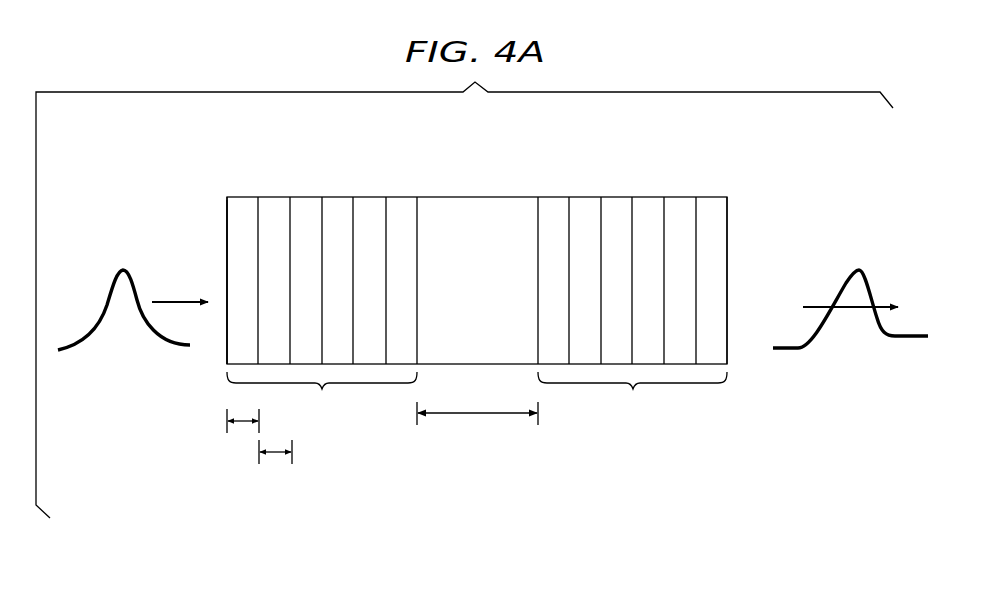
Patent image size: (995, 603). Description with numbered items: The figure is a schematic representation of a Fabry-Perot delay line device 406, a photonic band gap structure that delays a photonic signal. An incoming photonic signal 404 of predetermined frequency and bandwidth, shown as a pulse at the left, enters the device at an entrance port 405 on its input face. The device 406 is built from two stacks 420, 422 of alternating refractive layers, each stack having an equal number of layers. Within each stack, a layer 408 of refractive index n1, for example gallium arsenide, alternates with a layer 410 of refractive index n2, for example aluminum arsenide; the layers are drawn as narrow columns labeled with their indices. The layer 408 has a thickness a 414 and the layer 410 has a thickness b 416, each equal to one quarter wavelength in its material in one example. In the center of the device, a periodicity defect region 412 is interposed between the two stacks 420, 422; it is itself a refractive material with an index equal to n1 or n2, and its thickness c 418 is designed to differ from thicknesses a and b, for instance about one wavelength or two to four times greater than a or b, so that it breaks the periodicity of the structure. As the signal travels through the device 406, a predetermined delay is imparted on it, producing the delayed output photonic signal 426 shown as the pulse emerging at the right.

The photonic signal 404 is at (122, 269).
The entrance port 405 is at (227, 245).
The Fabry-Perot delay line device 406 is at (622, 182).
The layer 408 is at (240, 196).
The layer 410 is at (271, 196).
The periodicity defect region 412 is at (455, 196).
The thickness a 414 is at (232, 440).
The thickness b 416 is at (279, 482).
The thickness c 418 is at (487, 433).
The stack 420 is at (322, 309).
The stack 422 is at (632, 309).
The delayed output photonic signal 426 is at (860, 268).